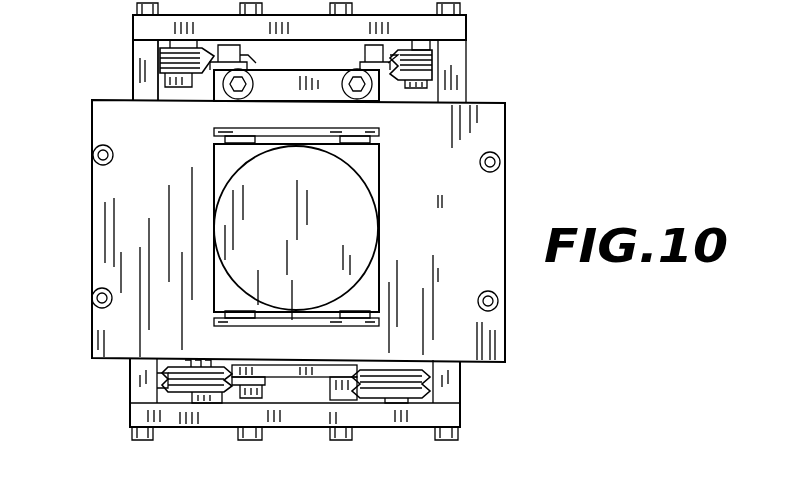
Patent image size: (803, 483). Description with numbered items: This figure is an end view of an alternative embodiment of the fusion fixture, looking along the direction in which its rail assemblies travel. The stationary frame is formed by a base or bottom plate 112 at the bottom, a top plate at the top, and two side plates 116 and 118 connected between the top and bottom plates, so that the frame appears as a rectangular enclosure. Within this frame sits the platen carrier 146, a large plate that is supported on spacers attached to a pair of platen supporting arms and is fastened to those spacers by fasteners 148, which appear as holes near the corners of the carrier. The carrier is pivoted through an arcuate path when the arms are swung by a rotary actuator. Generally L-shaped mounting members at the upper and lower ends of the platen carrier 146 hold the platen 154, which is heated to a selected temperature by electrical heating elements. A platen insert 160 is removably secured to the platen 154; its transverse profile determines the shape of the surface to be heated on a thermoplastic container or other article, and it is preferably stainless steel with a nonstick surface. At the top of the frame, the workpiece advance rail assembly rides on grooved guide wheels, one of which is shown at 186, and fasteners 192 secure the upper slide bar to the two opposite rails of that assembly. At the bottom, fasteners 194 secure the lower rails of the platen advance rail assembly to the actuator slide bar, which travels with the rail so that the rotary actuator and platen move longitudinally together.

The bottom plate 112 is at (458, 418).
The side plate 116 is at (452, 68).
The side plate 118 is at (135, 57).
The platen carrier 146 is at (490, 135).
The fastener 148 is at (92, 298).
The platen 154 is at (380, 168).
The platen insert 160 is at (357, 238).
The guide wheel 186 is at (205, 83).
The fastener 192 is at (365, 47).
The fastener 194 is at (262, 390).